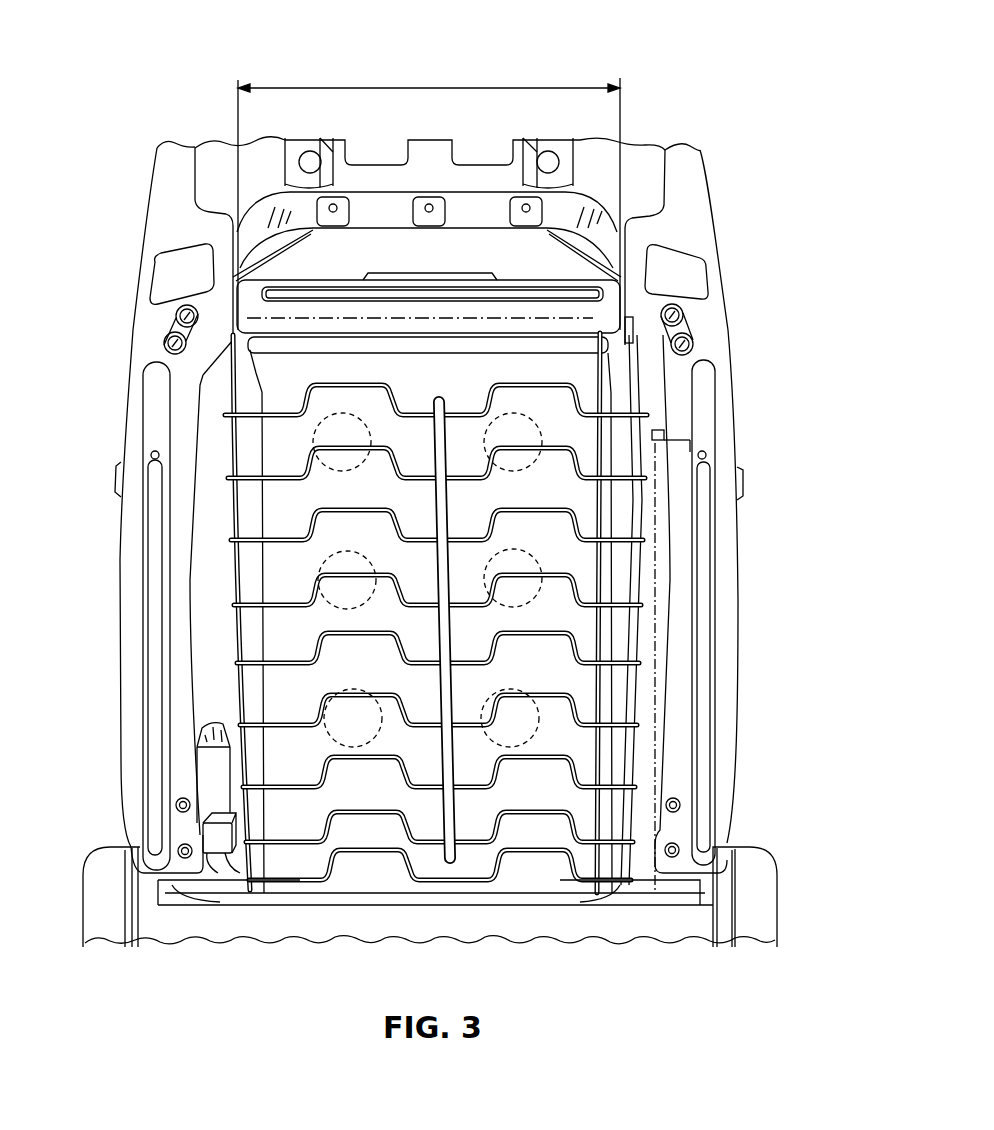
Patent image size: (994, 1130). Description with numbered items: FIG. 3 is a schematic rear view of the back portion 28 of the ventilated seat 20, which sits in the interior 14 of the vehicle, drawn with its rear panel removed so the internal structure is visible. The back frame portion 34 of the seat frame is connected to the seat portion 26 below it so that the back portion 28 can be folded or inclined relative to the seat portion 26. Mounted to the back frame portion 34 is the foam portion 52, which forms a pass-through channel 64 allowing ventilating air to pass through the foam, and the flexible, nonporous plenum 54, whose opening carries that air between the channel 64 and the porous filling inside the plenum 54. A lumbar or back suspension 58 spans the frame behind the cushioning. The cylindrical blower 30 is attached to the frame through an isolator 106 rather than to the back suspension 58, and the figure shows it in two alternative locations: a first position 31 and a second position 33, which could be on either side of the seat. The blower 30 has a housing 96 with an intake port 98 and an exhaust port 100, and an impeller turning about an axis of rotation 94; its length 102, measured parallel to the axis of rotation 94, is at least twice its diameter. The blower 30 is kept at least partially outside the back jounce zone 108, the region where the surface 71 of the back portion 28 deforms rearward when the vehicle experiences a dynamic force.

The interior 14 is at (811, 466).
The ventilated seat 20 is at (358, 74).
The seat portion 26 is at (569, 941).
The back portion 28 is at (152, 161).
The cylindrical blower 30 is at (603, 311).
The first position 31 is at (246, 341).
The second position 33 is at (697, 442).
The back frame portion 34 is at (152, 325).
The foam portion 52 is at (223, 692).
The plenum 54 is at (285, 582).
The back suspension 58 is at (440, 500).
The channel 64 is at (347, 610).
The surface 71 is at (548, 606).
The axis of rotation 94 is at (378, 338).
The housing 96 is at (292, 282).
The intake port 98 is at (603, 387).
The exhaust port 100 is at (560, 292).
The length 102 is at (515, 88).
The isolator 106 is at (227, 324).
The back jounce zone 108 is at (458, 682).